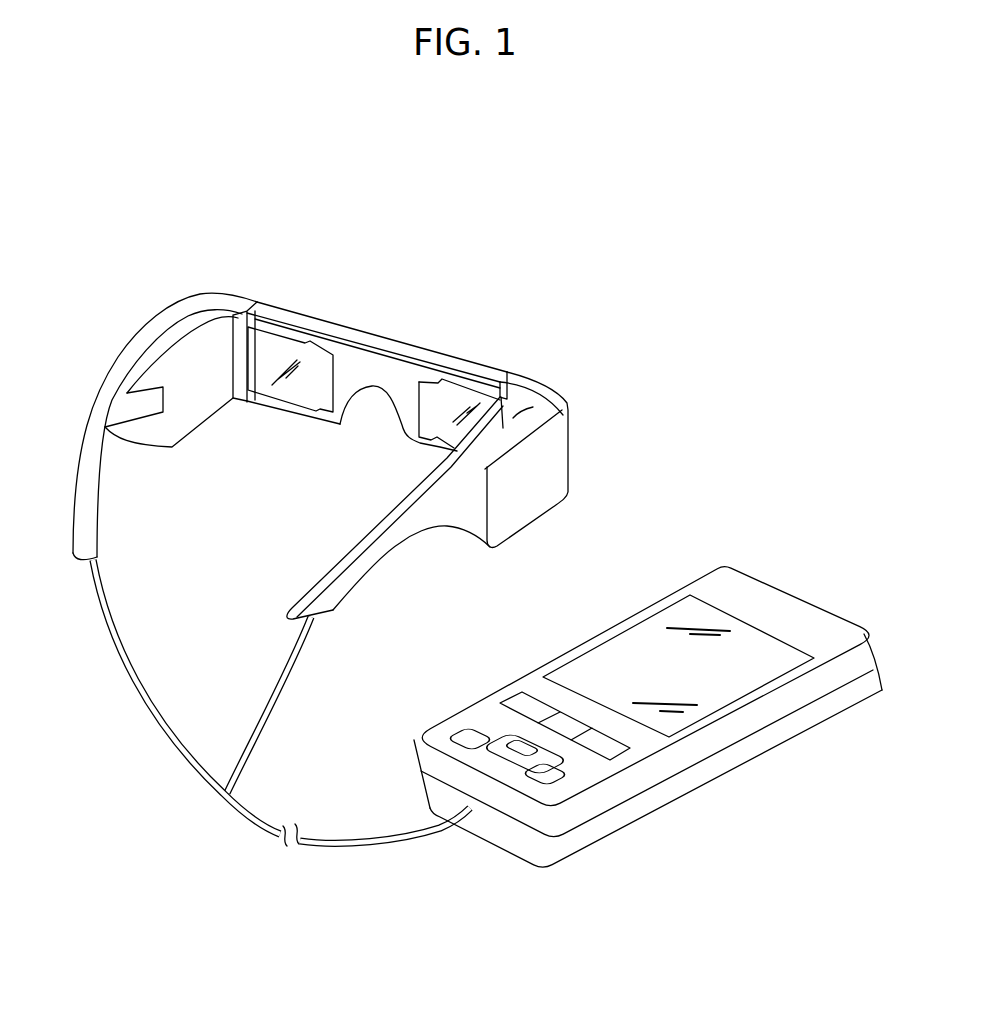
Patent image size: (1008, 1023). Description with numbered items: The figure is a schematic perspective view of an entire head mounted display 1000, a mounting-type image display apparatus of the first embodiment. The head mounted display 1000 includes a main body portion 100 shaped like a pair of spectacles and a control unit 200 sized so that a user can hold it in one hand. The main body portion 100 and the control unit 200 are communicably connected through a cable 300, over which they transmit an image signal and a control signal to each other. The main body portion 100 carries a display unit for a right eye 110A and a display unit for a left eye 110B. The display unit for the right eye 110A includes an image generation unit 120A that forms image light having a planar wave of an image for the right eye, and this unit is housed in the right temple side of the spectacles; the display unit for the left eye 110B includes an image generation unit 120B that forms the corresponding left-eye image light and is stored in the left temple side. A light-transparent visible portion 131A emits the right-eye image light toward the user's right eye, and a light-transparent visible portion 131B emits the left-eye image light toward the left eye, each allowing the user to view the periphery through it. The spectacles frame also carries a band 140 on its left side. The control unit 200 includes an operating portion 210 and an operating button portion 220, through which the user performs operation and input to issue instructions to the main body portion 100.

The head mounted display 1000 is at (677, 331).
The main body portion 100 is at (537, 271).
The display unit for a right eye 110A is at (496, 343).
The display unit for a left eye 110B is at (316, 296).
The image generation unit 120A is at (570, 401).
The image generation unit 120B is at (175, 345).
The visible portion 131A is at (446, 423).
The visible portion 131B is at (303, 390).
The headband 140 is at (104, 387).
The control unit 200 is at (819, 585).
The operating portion 210 is at (650, 647).
The operating button portion 220 is at (516, 661).
The cable 300 is at (131, 675).